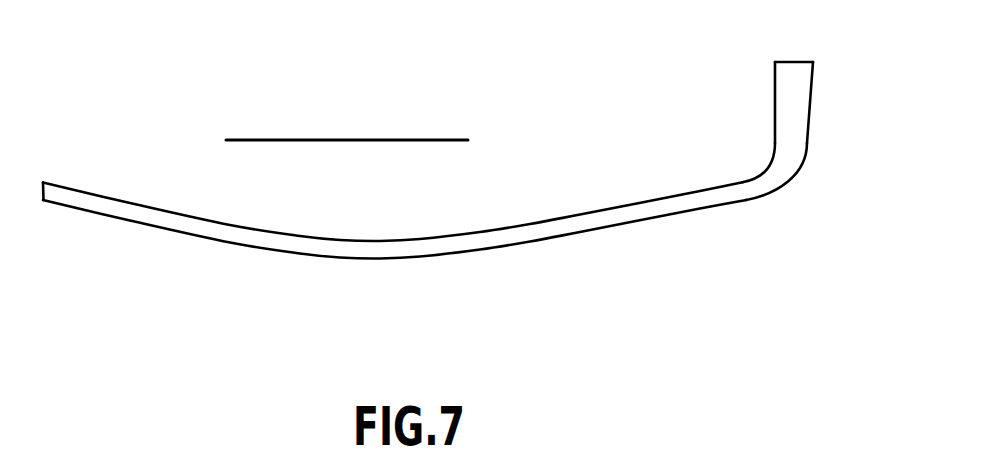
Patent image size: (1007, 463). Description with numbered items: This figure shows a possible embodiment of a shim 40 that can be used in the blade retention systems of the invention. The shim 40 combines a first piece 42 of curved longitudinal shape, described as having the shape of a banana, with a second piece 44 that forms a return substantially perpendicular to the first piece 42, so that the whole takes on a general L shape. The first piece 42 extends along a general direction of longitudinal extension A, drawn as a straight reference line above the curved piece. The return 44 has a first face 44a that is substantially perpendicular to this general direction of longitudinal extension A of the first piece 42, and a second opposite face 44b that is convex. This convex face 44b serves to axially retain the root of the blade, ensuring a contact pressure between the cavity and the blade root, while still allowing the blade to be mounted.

The general direction of longitudinal extension A is at (346, 139).
The shim 40 is at (463, 196).
The first piece 42 is at (277, 258).
The second piece (return) 44 is at (780, 107).
The first face 44a is at (766, 106).
The second opposite face 44b is at (825, 91).